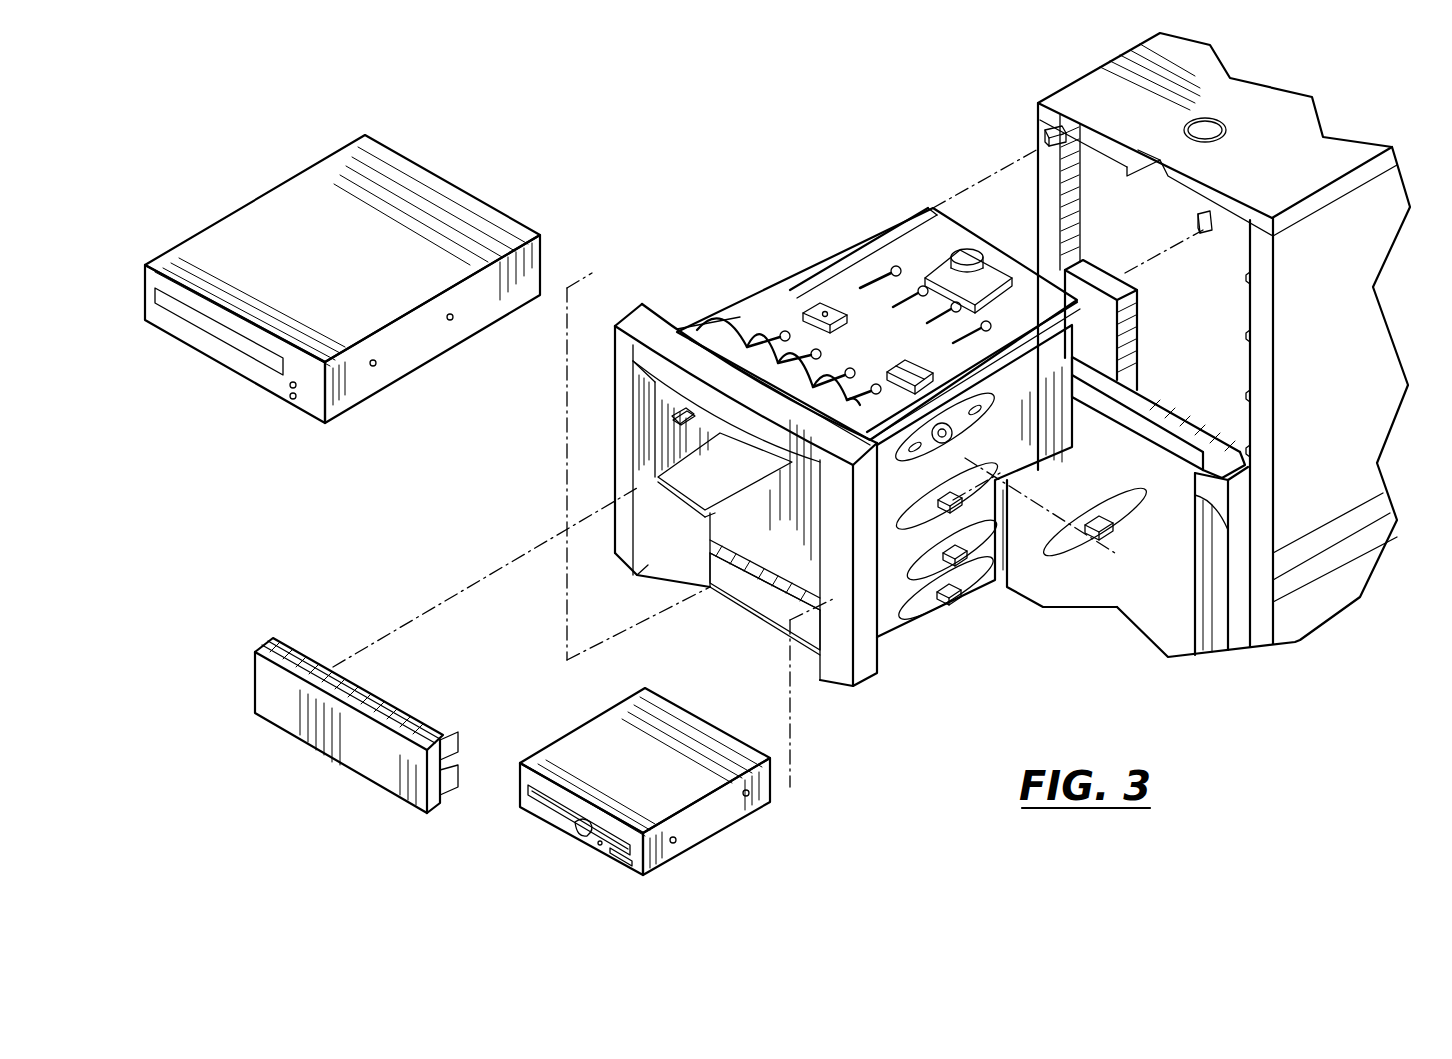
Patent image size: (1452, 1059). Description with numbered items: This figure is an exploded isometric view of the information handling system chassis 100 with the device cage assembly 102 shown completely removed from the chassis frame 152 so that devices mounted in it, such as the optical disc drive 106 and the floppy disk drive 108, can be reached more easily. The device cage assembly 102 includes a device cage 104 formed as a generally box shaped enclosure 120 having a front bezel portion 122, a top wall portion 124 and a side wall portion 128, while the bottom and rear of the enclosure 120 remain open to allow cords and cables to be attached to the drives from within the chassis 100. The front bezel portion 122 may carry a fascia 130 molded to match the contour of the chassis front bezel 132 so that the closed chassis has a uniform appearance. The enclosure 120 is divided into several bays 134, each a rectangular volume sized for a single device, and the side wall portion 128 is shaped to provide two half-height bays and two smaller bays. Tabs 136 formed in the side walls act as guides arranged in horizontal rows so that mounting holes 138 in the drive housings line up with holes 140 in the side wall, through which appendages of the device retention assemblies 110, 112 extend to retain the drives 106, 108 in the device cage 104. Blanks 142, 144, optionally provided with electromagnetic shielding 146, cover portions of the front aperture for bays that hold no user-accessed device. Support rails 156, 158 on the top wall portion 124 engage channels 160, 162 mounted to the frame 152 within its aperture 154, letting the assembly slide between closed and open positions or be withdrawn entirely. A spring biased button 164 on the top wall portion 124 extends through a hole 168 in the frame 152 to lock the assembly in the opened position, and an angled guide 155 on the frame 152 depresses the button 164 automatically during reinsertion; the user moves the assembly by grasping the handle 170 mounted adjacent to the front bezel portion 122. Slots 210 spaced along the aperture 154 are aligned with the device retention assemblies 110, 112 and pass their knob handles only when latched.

The information handling system chassis 100 is at (812, 155).
The device cage assembly 102 is at (790, 320).
The device cage 104 is at (875, 268).
The optical disc drive 106 is at (478, 203).
The floppy disk drive 108 is at (582, 828).
The device retention assembly 110 is at (1070, 520).
The device retention assembly 112 is at (941, 608).
The enclosure 120 is at (823, 300).
The front bezel portion 122 is at (612, 352).
The top wall portion 124 is at (852, 350).
The second side wall portion 128 is at (770, 520).
The fascia 130 is at (690, 552).
The chassis front bezel 132 is at (1120, 587).
The bays 134 is at (680, 437).
The tabs 136 is at (700, 432).
The mounting holes 138 is at (447, 317).
The holes 140 is at (983, 405).
The blank 142 is at (343, 737).
The blank 144 is at (780, 612).
The electromagnetic shielding 146 is at (365, 698).
The chassis frame 152 is at (1293, 217).
The aperture 154 is at (1230, 300).
The angled guide 155 is at (1150, 155).
The support rail 156 is at (910, 218).
The support rail 158 is at (1085, 300).
The channel 160 is at (1046, 136).
The channel 162 is at (1197, 222).
The spring biased button 164 is at (968, 257).
The hole 168 is at (1226, 129).
The handle 170 is at (695, 330).
The slots 210 is at (1246, 276).